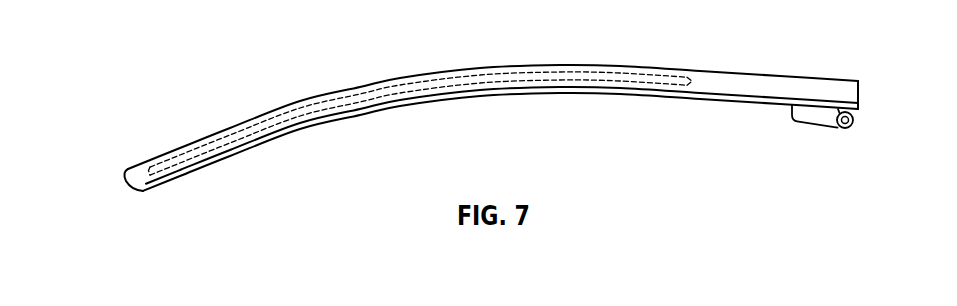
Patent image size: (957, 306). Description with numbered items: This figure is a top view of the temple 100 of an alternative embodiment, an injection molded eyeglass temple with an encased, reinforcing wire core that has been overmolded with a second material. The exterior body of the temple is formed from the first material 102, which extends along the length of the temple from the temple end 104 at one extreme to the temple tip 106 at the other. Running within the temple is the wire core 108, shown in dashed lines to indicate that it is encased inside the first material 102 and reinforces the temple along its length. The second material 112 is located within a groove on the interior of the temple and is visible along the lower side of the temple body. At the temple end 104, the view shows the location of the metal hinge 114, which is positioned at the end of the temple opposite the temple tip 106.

The temple 100 is at (261, 49).
The first material 102 is at (723, 78).
The temple end 104 is at (860, 86).
The temple tip 106 is at (125, 173).
The wire core 108 is at (433, 83).
The second material 112 is at (265, 144).
The metal hinge 114 is at (820, 122).